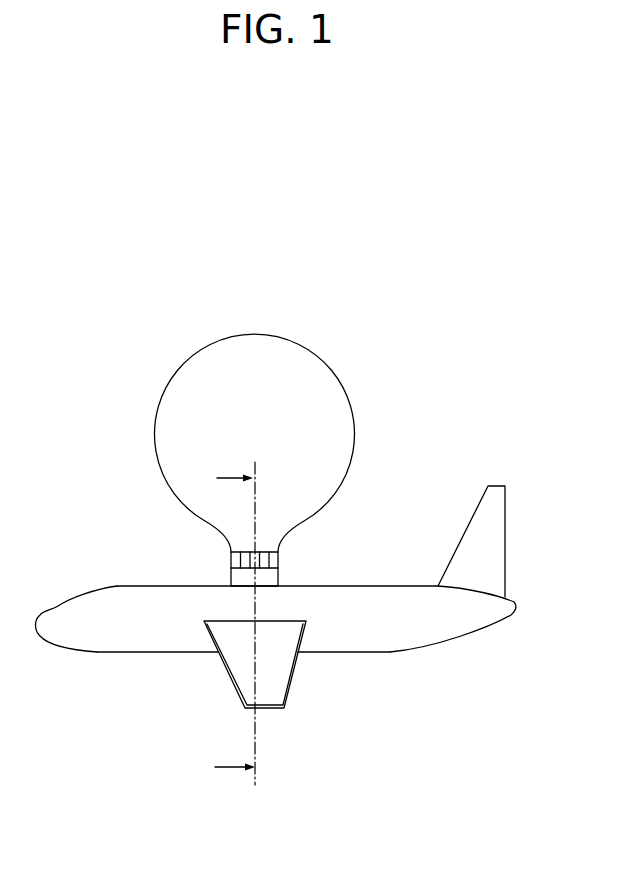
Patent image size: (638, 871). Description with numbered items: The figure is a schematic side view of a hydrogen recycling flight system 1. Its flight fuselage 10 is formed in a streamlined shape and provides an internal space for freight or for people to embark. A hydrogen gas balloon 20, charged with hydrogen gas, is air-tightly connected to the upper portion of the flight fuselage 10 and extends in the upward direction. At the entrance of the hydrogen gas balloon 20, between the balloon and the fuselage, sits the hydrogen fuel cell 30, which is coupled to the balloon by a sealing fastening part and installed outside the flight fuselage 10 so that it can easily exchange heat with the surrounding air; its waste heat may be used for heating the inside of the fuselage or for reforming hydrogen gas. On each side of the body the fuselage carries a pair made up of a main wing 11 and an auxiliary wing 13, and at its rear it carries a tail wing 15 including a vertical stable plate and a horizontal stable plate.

The hydrogen recycling flight system 1 is at (247, 309).
The flight fuselage 10 is at (437, 624).
The main wing 11 is at (295, 664).
The auxiliary wing 13 is at (280, 689).
The tail wing 15 is at (495, 529).
The hydrogen gas balloon 20 is at (338, 408).
The hydrogen fuel cell 30 is at (273, 575).